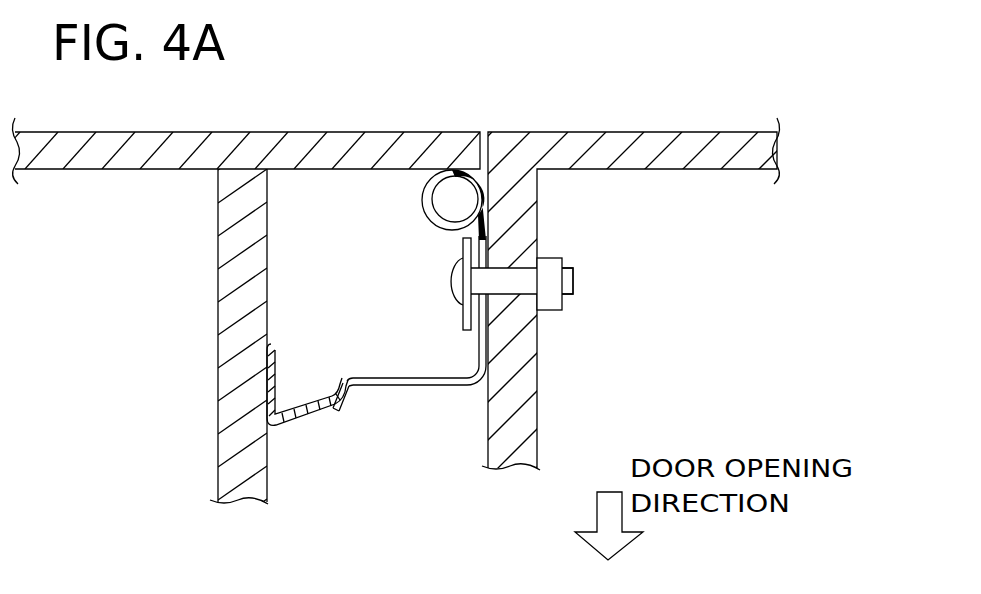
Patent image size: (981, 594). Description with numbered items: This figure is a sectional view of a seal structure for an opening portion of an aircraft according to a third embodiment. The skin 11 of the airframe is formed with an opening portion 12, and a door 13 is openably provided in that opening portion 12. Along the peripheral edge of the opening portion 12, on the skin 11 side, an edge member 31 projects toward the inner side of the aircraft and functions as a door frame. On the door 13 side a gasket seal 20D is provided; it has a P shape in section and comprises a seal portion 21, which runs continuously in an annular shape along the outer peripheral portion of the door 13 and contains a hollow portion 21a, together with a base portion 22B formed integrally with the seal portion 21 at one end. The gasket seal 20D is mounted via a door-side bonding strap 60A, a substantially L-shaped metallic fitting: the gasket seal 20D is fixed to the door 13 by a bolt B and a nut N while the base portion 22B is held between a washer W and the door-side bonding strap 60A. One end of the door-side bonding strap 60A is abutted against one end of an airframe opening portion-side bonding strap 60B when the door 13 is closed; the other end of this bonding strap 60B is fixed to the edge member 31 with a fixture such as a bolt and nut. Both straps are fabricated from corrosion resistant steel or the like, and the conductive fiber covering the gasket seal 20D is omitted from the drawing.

The skin 11 is at (377, 134).
The opening portion 12 is at (498, 143).
The door 13 is at (653, 141).
The edge member 31 is at (231, 296).
The gasket seal 20D is at (396, 212).
The seal portion 21 is at (423, 183).
The hollow portion 21a is at (453, 202).
The base portion 22B is at (464, 388).
The door-side bonding strap 60A is at (413, 390).
The airframe opening portion-side bonding strap 60B is at (298, 420).
The bolt B is at (457, 277).
The washer W is at (463, 318).
The nut N is at (564, 264).